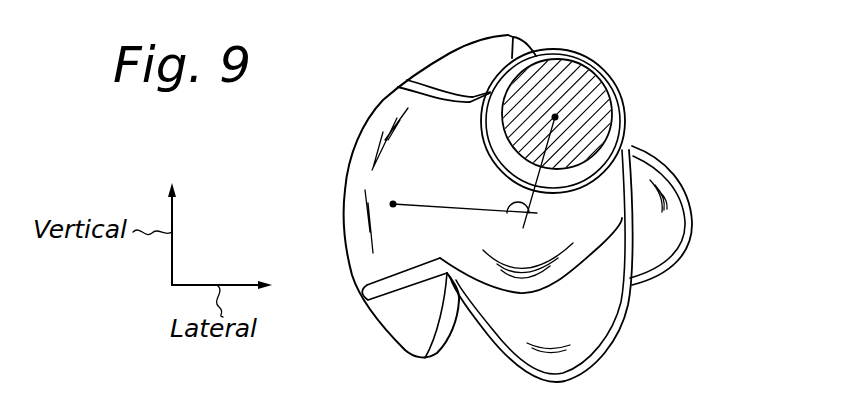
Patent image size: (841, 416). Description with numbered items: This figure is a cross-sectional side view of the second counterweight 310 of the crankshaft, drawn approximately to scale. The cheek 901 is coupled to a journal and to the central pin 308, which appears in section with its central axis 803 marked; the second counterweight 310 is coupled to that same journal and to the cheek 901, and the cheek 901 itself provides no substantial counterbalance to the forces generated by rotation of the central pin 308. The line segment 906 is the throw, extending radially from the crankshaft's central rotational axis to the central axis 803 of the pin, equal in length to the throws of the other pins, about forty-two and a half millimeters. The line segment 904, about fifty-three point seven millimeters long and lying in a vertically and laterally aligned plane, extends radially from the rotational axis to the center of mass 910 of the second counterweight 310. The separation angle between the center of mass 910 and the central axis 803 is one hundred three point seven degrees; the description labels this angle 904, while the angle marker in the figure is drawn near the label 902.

The second counterweight 310 is at (348, 188).
The central pin 308 is at (595, 87).
The central axis of the central pin 803 is at (555, 117).
The line segment 904 is at (457, 212).
The lateral reference line 902 is at (513, 199).
The center of mass of the second counterweight 910 is at (393, 204).
The line segment 906 is at (628, 153).
The cheek 901 is at (555, 255).